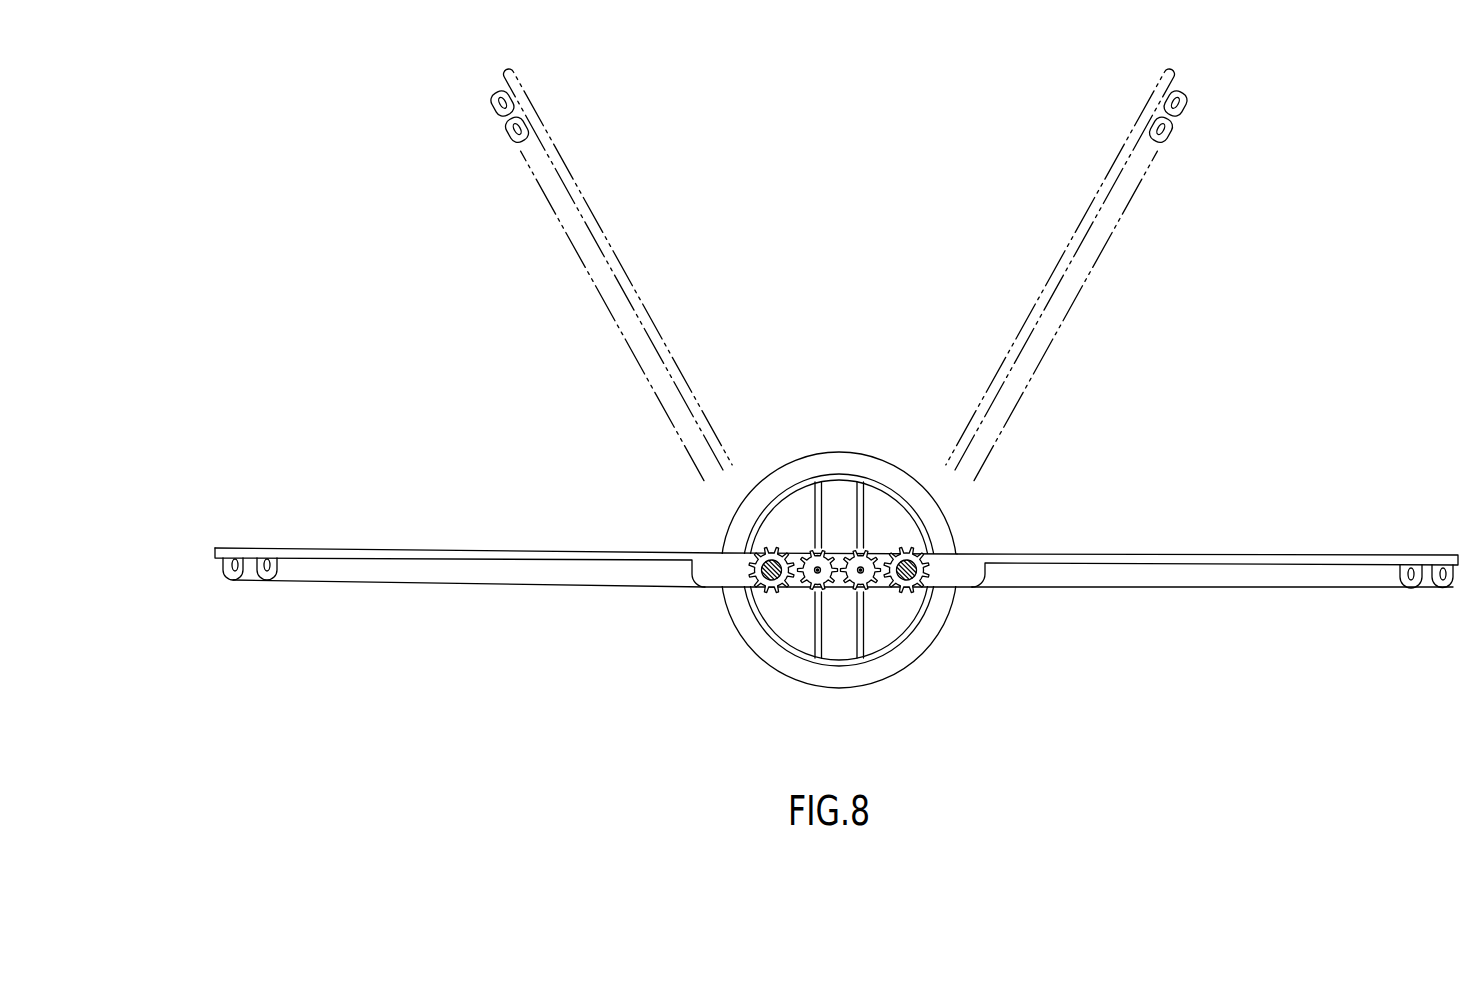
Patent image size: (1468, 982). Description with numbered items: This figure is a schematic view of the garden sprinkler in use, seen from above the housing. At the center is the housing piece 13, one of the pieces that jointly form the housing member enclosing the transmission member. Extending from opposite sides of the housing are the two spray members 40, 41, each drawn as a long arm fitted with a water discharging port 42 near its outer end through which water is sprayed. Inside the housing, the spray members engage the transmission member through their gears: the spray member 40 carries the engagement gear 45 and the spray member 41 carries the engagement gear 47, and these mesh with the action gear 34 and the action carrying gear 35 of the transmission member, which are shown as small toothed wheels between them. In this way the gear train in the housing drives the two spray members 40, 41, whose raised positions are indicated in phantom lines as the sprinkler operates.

The housing piece 13 is at (840, 462).
The action gear 34 is at (865, 590).
The action carrying gear 35 is at (813, 590).
The spray member 40 is at (1162, 555).
The spray member 41 is at (407, 558).
The water discharging port 42 is at (223, 570).
The engagement gear 45 is at (907, 590).
The engagement gear 47 is at (772, 590).